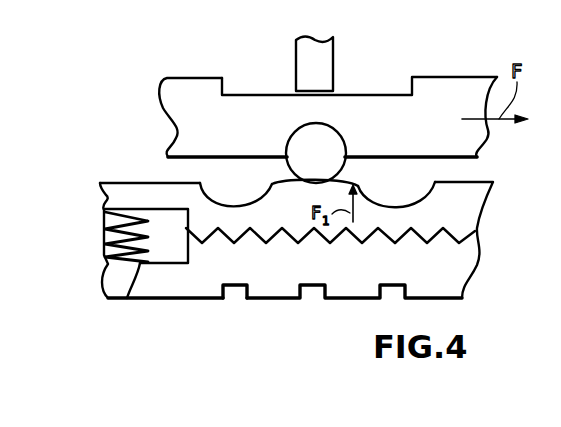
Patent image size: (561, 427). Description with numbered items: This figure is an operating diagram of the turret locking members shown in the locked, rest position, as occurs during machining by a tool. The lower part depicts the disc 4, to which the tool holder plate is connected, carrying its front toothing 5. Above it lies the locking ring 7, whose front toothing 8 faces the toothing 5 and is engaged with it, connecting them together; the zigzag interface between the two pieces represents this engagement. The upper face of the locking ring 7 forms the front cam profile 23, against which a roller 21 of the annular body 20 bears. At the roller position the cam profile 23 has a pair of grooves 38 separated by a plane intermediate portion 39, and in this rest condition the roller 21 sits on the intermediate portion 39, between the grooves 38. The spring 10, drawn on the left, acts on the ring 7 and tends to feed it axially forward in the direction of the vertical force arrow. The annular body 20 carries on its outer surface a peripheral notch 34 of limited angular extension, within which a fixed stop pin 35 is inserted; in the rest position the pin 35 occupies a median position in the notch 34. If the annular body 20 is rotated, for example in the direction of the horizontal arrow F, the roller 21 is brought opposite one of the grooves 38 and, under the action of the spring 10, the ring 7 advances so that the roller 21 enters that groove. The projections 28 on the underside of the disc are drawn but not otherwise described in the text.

The annular body 20 is at (180, 110).
The peripheral notch 34 is at (241, 93).
The fixed stop pin 35 is at (318, 58).
The rollers 21 is at (327, 143).
The locking ring 7 is at (123, 193).
The grooves 38 is at (210, 192).
The plane intermediate portion 39 is at (308, 186).
The front cam profile 23 is at (450, 190).
The spring 10 is at (137, 263).
The front toothing 5 is at (350, 234).
The front toothing 8 is at (424, 226).
The disc 4 is at (447, 274).
The projection 28 is at (233, 292).